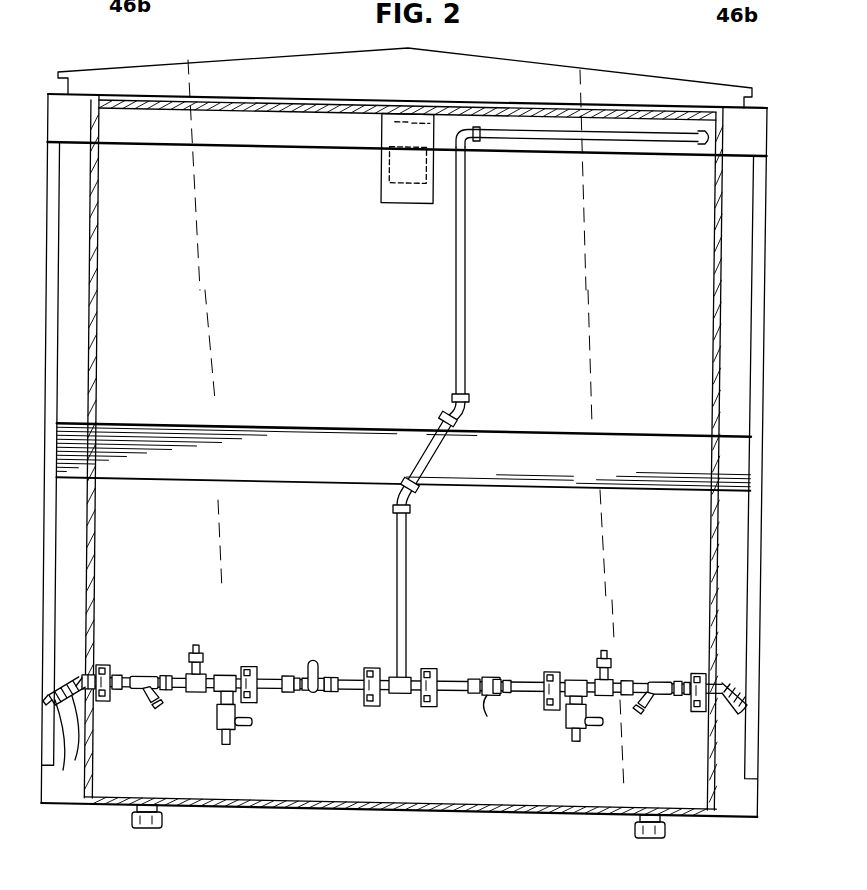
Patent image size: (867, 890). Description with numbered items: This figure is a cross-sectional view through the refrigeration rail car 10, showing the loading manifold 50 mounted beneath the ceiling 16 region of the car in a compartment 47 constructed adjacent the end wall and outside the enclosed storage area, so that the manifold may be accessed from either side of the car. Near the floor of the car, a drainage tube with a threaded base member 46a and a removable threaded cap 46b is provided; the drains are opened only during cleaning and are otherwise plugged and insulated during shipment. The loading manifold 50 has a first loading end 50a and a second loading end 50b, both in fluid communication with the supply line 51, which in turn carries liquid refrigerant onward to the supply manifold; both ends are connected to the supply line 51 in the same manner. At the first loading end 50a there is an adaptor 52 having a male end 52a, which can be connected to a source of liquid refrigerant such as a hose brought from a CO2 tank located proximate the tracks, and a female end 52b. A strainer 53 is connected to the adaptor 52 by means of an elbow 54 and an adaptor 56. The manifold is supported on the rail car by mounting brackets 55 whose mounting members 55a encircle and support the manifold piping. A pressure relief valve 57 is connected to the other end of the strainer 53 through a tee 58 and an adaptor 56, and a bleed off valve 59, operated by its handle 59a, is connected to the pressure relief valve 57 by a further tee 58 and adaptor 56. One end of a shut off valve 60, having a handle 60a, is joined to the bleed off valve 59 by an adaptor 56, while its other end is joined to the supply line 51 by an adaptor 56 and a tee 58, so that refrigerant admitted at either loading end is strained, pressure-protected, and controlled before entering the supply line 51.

The refrigeration rail car 10 is at (616, 66).
The ceiling 16 is at (502, 51).
The threaded base member 46a is at (137, 810).
The removable threaded cap 46b is at (162, 826).
The compartment 47 is at (650, 104).
The loading manifold 50 is at (507, 642).
The first loading end 50a is at (59, 746).
The second loading end 50b is at (738, 692).
The supply line 51 is at (408, 562).
The adaptor 52 is at (52, 690).
The male end 52a is at (62, 694).
The female end 52b is at (88, 672).
The strainer 53 is at (137, 676).
The elbow 54 is at (115, 672).
The mounting bracket 55 is at (101, 700).
The mounting member 55a is at (110, 700).
The adaptor 56 is at (120, 675).
The pressure relief valve 57 is at (198, 643).
The tee 58 is at (226, 673).
The bleed off valve 59 is at (224, 742).
The handle 59a is at (240, 725).
The shut off valve 60 is at (308, 692).
The handle 60a is at (313, 658).